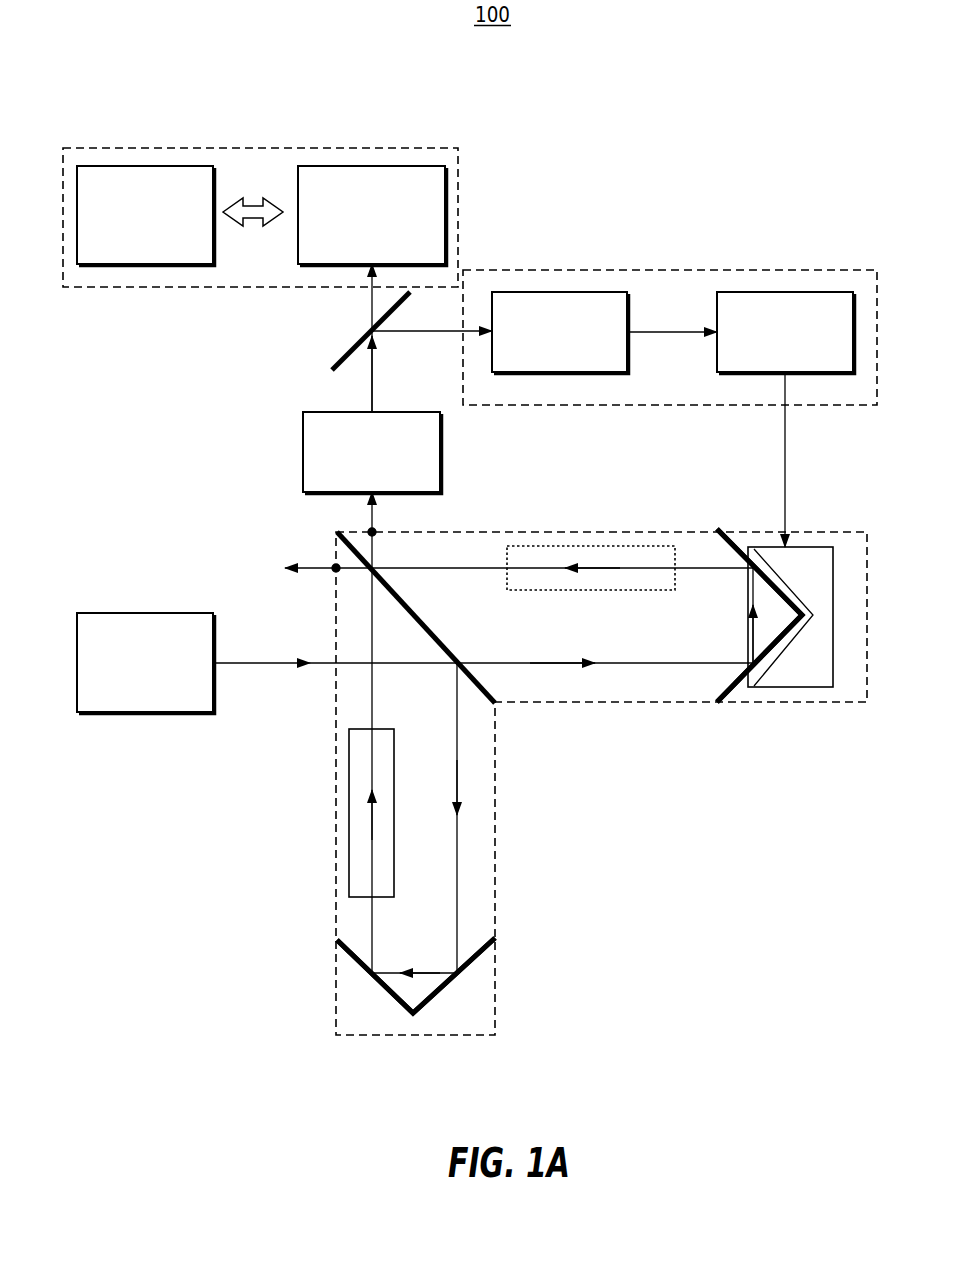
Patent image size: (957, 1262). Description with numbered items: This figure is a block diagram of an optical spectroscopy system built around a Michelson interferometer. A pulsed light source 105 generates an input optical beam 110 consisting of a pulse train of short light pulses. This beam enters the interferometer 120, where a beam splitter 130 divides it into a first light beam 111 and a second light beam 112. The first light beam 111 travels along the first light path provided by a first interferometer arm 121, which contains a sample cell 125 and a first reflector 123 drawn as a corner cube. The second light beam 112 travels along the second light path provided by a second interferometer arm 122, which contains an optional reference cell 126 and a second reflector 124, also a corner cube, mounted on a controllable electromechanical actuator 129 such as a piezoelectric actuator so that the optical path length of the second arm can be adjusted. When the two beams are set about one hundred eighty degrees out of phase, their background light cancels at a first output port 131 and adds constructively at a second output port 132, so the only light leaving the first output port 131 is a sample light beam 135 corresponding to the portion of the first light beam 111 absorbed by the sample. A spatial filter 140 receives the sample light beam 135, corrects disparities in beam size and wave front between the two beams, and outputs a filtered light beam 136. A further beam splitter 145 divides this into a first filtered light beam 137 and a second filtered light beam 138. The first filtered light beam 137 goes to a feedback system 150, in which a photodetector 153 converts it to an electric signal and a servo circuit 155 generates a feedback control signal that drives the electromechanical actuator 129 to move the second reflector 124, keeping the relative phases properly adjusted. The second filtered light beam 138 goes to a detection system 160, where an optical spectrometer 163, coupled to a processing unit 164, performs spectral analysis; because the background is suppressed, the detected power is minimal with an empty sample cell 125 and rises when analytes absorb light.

The pulsed light source 105 is at (137, 613).
The input optical beam 110 is at (253, 666).
The first light beam 111 is at (455, 723).
The second light beam 112 is at (525, 663).
The interferometer 120 is at (562, 762).
The first interferometer arm 121 is at (337, 995).
The second interferometer arm 122 is at (814, 530).
The first reflector 123 is at (447, 985).
The second reflector 124 is at (733, 690).
The sample cell 125 is at (349, 832).
The reference cell 126 is at (635, 558).
The electromechanical actuator 129 is at (837, 567).
The beam splitter 130 is at (428, 620).
The first output port 131 is at (337, 532).
The second output port 132 is at (336, 572).
The sample light beam 135 is at (372, 527).
The filtered light beam 136 is at (372, 388).
The first filtered light beam 137 is at (415, 343).
The second filtered light beam 138 is at (372, 300).
The spatial filter 140 is at (303, 440).
The beam splitter 145 is at (352, 351).
The feedback system 150 is at (816, 270).
The photodetector 153 is at (565, 292).
The servo circuit 155 is at (750, 292).
The detection system 160 is at (222, 148).
The optical spectrometer 163 is at (380, 166).
The processing unit 164 is at (137, 166).